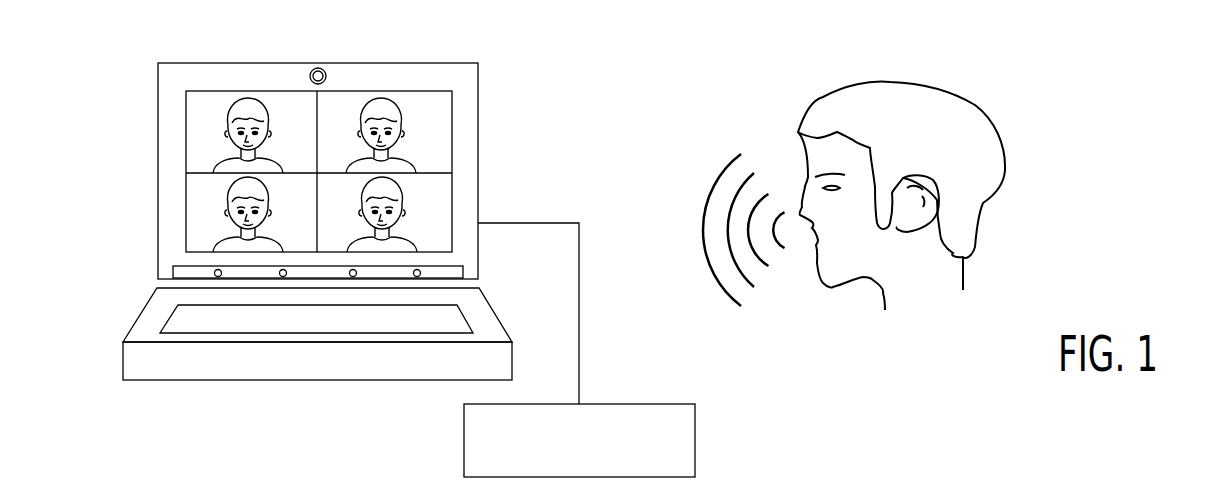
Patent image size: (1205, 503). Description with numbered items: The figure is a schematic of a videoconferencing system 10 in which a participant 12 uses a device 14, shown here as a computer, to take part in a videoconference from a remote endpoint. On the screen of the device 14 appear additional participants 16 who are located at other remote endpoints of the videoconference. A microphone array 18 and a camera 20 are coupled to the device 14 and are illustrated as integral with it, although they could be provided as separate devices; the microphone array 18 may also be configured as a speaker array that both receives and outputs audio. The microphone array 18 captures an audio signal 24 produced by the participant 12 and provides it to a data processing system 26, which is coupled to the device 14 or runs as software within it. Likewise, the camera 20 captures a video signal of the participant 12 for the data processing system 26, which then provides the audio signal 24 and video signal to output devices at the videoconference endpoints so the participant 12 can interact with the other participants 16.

The videoconferencing system 10 is at (99, 64).
The participant 12 is at (825, 98).
The device 14 is at (478, 171).
The additional participants 16 is at (271, 133).
The microphone array 18 is at (463, 273).
The camera 20 is at (318, 67).
The audio signal 24 is at (716, 183).
The data processing system 26 is at (612, 404).